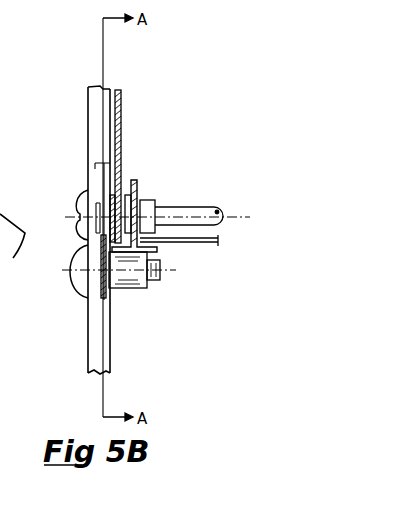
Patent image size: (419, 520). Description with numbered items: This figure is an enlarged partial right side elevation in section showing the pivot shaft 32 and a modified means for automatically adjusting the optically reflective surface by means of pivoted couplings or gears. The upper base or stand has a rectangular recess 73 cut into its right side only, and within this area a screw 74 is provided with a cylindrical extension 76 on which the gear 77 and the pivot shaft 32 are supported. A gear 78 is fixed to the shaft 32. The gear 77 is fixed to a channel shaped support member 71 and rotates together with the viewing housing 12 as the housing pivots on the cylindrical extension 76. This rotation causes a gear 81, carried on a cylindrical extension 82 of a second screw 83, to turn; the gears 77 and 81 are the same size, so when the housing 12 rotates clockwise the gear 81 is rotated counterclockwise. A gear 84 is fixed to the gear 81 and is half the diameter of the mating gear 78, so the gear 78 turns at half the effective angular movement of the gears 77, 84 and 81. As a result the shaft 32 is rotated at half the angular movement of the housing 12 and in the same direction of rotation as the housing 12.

The viewing housing 12 is at (122, 118).
The pivot shaft 32 is at (180, 208).
The channel shaped support member 71 is at (124, 176).
The rectangular recess 73 is at (100, 172).
The screw 74 is at (78, 206).
The cylindrical extension 76 is at (97, 233).
The gear 77 is at (105, 186).
The gear 78 is at (128, 182).
The gear 81 is at (108, 305).
The cylindrical extension 82 is at (160, 277).
The screw 83 is at (74, 291).
The gear 84 is at (137, 289).